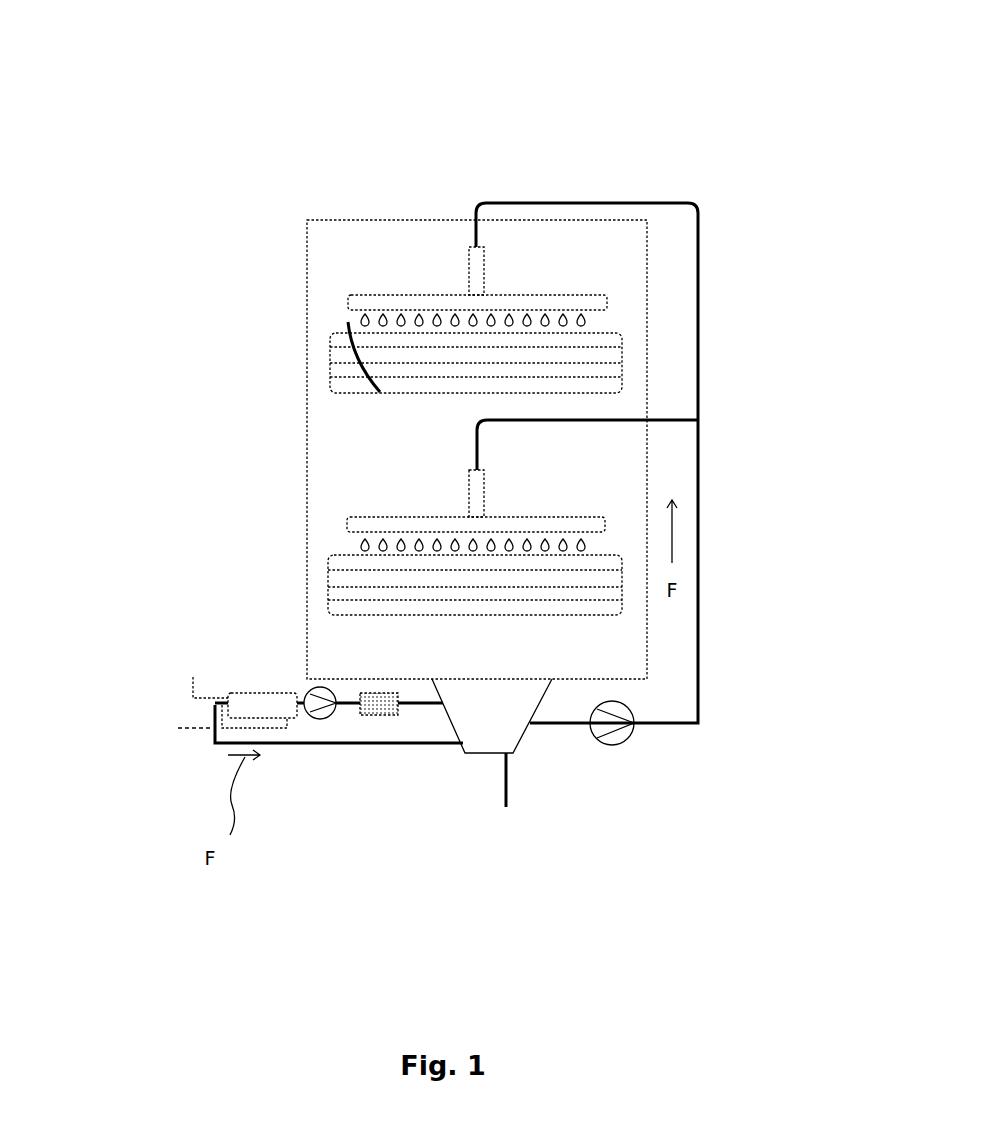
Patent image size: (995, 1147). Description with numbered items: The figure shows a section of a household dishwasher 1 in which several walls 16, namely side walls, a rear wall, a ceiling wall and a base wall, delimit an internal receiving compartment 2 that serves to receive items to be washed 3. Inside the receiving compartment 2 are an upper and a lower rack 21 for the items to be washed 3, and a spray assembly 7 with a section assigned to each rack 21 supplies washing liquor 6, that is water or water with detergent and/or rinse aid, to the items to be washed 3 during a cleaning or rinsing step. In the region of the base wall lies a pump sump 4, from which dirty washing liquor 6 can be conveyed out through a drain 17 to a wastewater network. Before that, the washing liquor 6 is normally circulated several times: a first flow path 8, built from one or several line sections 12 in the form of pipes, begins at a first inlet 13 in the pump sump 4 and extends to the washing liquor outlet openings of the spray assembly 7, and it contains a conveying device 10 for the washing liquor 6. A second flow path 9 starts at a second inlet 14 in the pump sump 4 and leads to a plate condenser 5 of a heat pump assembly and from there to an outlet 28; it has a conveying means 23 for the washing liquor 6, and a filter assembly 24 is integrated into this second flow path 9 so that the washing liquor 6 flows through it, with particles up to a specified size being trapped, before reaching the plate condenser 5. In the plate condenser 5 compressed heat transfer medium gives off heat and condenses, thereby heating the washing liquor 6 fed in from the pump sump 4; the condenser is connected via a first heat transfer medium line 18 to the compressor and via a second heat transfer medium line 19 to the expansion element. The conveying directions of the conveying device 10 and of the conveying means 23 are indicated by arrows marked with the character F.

The household dishwasher 1 is at (219, 87).
The receiving compartment 2 is at (343, 240).
The items to be washed 3 is at (348, 325).
The pump sump 4 is at (517, 745).
The plate condenser 5 is at (283, 693).
The washing liquor 6 is at (345, 543).
The spray assembly 7 is at (348, 300).
The first flow path 8 is at (698, 645).
The second flow path 9 is at (435, 745).
The conveying device 10 is at (613, 745).
The line section 12 is at (698, 526).
The first inlet 13 is at (512, 725).
The second inlet 14 is at (447, 700).
The wall 16 is at (306, 388).
The drain 17 is at (510, 795).
The first heat transfer medium line 18 is at (193, 677).
The second heat transfer medium line 19 is at (190, 725).
The rack 21 is at (622, 373).
The conveying means 23 is at (318, 720).
The filter assembly 24 is at (380, 693).
The outlet 28 is at (466, 738).